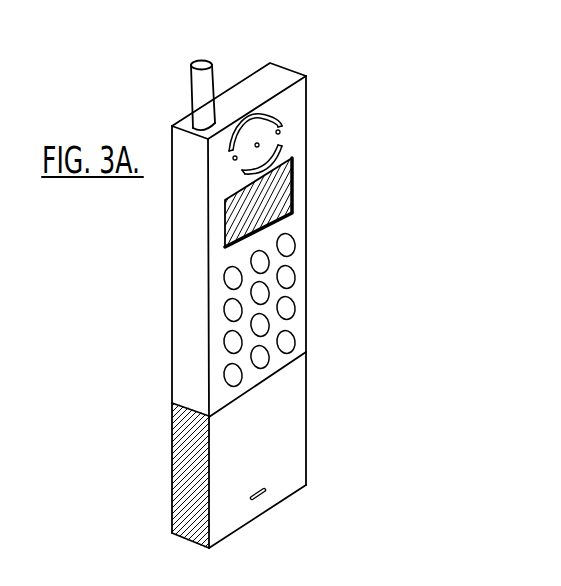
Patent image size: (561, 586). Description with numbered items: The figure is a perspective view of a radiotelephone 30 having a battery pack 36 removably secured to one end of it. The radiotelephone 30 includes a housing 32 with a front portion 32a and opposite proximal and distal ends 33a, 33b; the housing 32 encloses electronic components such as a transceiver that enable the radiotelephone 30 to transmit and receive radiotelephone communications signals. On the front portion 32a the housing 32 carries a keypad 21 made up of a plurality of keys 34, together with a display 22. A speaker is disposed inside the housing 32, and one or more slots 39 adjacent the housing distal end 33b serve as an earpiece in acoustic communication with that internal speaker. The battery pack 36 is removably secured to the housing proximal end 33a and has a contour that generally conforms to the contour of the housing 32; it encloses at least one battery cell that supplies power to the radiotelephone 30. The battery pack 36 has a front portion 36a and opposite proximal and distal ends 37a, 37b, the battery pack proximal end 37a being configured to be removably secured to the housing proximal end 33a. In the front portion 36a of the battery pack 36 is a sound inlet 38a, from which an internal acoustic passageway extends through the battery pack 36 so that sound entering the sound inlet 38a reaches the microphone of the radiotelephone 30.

The keypad 21 is at (298, 246).
The display 22 is at (297, 172).
The radiotelephone 30 is at (383, 215).
The housing 32 is at (306, 107).
The front portion 32a is at (297, 313).
The proximal end 33a is at (293, 356).
The distal end 33b is at (303, 76).
The keys 34 is at (224, 342).
The battery pack 36 is at (172, 474).
The front portion 36a is at (285, 430).
The proximal end 37a is at (172, 412).
The distal end 37b is at (197, 549).
The sound inlet 38a is at (263, 503).
The slots 39 is at (278, 130).